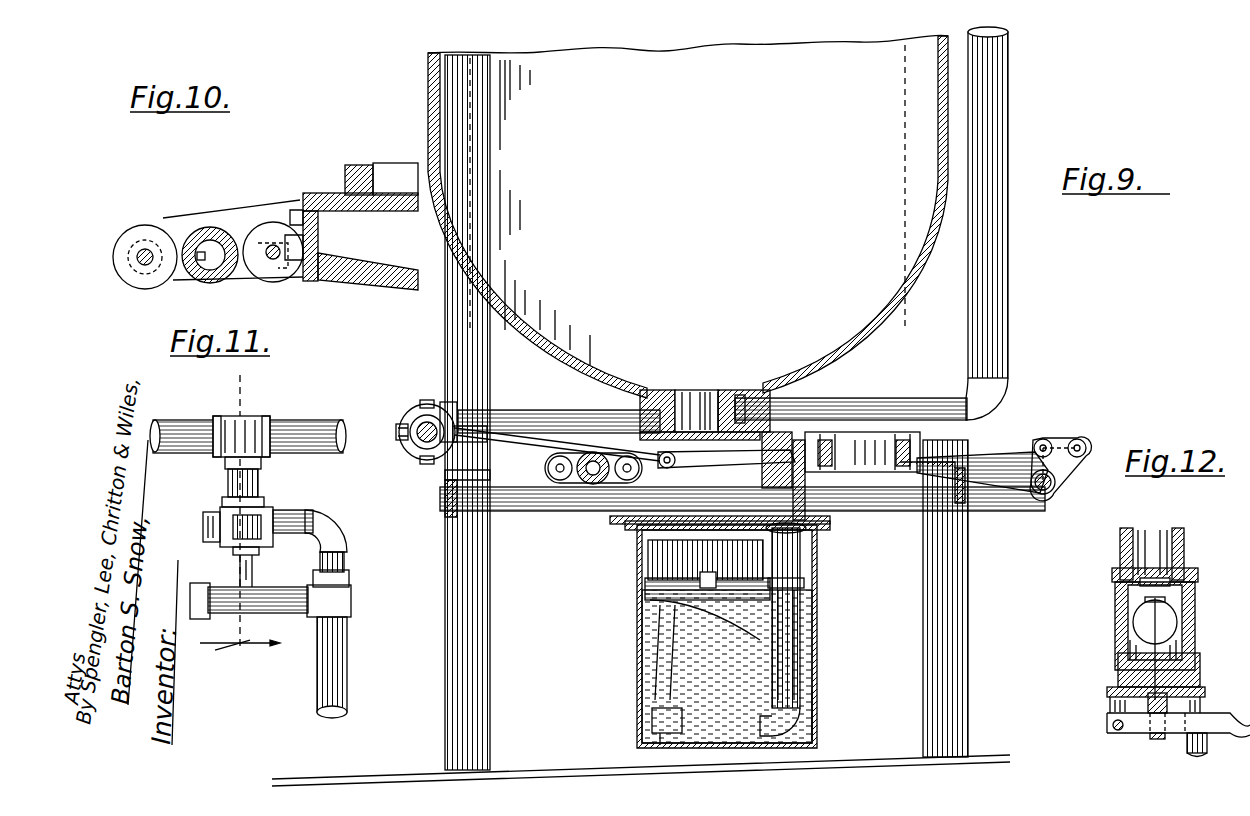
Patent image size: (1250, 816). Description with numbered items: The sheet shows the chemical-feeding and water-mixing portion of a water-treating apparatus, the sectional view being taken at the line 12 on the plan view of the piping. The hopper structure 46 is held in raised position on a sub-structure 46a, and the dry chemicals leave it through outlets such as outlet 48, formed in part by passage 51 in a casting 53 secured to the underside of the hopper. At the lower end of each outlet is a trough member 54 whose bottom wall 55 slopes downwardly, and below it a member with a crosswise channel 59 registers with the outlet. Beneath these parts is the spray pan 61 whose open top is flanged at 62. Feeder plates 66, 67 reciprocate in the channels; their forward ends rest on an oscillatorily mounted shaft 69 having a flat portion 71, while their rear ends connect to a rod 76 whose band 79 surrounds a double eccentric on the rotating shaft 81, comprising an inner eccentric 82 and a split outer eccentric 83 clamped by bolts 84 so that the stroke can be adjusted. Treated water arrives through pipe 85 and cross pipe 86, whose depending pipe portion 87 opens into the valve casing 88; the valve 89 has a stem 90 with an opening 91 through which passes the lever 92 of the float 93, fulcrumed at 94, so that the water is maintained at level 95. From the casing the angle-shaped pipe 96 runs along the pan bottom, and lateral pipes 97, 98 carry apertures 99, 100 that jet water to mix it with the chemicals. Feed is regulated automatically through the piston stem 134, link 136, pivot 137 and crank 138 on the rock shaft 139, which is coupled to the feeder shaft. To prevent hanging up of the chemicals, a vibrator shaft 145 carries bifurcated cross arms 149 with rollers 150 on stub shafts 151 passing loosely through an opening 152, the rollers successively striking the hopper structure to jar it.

In FIG. 11, the machine 12 is at (255, 640).
In FIG. 9, the hopper structure 46 is at (752, 207).
In FIG. 9, the sub-structure 46a is at (540, 646).
In FIG. 9, the outlet 48 is at (708, 392).
In FIG. 9, the passage 51 is at (718, 395).
In FIG. 9, the casting 53 is at (652, 390).
In FIG. 10, the casting 53 is at (360, 165).
In FIG. 9, the trough member 54 is at (655, 390).
In FIG. 9, the bottom wall 55 is at (695, 410).
In FIG. 9, the channel 59 is at (640, 522).
In FIG. 9, the spray pan 61 is at (818, 686).
In FIG. 9, the flange 62 is at (812, 482).
In FIG. 9, the feeder plate 66 is at (655, 545).
In FIG. 9, the feeder plate 67 is at (700, 445).
In FIG. 9, the shaft 69 is at (815, 520).
In FIG. 9, the flat portion 71 is at (770, 465).
In FIG. 9, the rod 76 is at (552, 432).
In FIG. 9, the band 79 is at (400, 432).
In FIG. 9, the shaft 81 is at (420, 440).
In FIG. 9, the inner eccentric 82 is at (420, 422).
In FIG. 9, the outer eccentric 83 is at (425, 403).
In FIG. 9, the bolts 84 is at (396, 420).
In FIG. 9, the pipe 85 is at (992, 142).
In FIG. 9, the pipe 86 is at (865, 398).
In FIG. 11, the pipe 86 is at (298, 428).
In FIG. 11, the depending pipe portion 87 is at (262, 482).
In FIG. 12, the depending pipe portion 87 is at (1120, 550).
In FIG. 11, the valve casing 88 is at (205, 512).
In FIG. 12, the valve casing 88 is at (1122, 602).
In FIG. 12, the valve 89 is at (1118, 576).
In FIG. 12, the stem 90 is at (1148, 628).
In FIG. 12, the opening 91 is at (1145, 706).
In FIG. 9, the lever 92 is at (810, 645).
In FIG. 12, the lever 92 is at (1228, 720).
In FIG. 9, the float 93 is at (648, 590).
In FIG. 12, the fulcrum 94 is at (1112, 727).
In FIG. 9, the water level 95 is at (700, 578).
In FIG. 9, the pipe 96 is at (808, 640).
In FIG. 11, the pipe 96 is at (340, 528).
In FIG. 9, the lateral pipe 97 is at (660, 605).
In FIG. 11, the lateral pipe 97 is at (220, 600).
In FIG. 9, the lateral pipe 98 is at (652, 716).
In FIG. 9, the apertures 99 is at (680, 610).
In FIG. 11, the apertures 99 is at (240, 620).
In FIG. 9, the apertures 100 is at (668, 745).
In FIG. 9, the piston stem 134 is at (1010, 452).
In FIG. 9, the link 136 is at (1048, 440).
In FIG. 9, the pivot 137 is at (1082, 440).
In FIG. 9, the crank 138 is at (1060, 462).
In FIG. 9, the rock shaft 139 is at (1043, 494).
In FIG. 9, the shaft 145 is at (594, 452).
In FIG. 10, the shaft 145 is at (212, 228).
In FIG. 9, the cross arms 149 is at (595, 484).
In FIG. 10, the cross arms 149 is at (178, 225).
In FIG. 9, the rollers 150 is at (548, 465).
In FIG. 10, the rollers 150 is at (130, 235).
In FIG. 10, the stub shafts 151 is at (128, 262).
In FIG. 10, the opening 152 is at (135, 255).